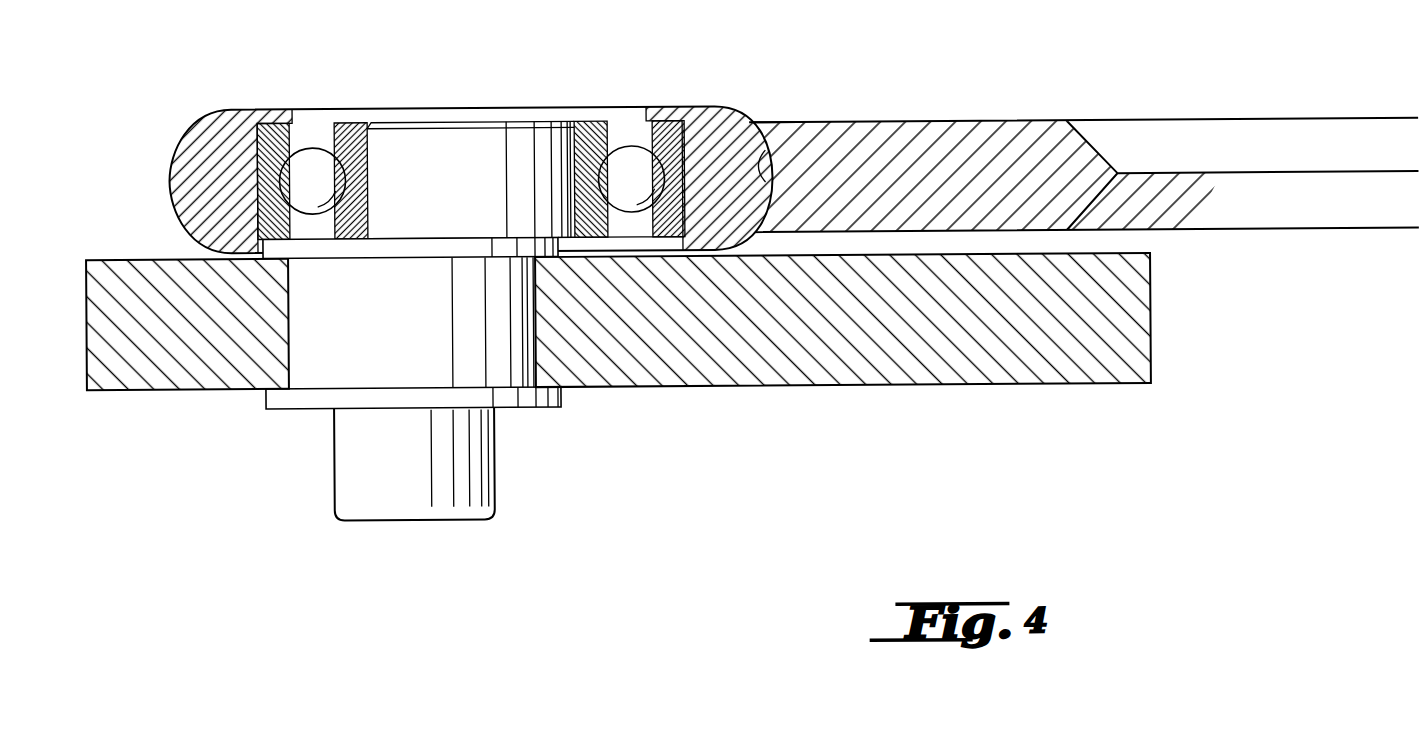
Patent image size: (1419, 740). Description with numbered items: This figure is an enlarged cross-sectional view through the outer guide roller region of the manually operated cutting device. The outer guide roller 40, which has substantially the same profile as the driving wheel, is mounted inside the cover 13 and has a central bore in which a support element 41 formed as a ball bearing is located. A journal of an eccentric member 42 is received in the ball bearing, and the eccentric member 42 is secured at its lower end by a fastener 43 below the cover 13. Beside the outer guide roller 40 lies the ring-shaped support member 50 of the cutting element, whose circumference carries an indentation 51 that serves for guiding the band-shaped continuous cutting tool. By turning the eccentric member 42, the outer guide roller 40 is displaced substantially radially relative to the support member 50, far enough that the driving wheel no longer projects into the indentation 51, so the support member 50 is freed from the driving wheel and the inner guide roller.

The cover 13 is at (957, 369).
The outer guide roller 40 is at (723, 107).
The support element 41 is at (597, 120).
The eccentric member 42 is at (434, 98).
The bolt 43 is at (382, 505).
The support member 50 is at (1042, 139).
The indentation 51 is at (781, 124).